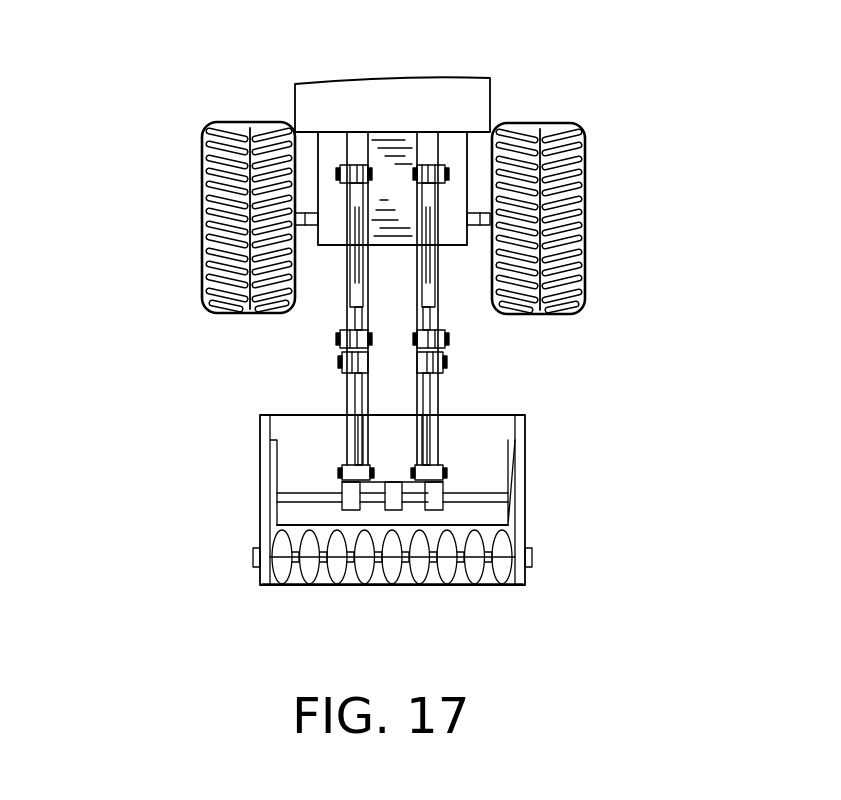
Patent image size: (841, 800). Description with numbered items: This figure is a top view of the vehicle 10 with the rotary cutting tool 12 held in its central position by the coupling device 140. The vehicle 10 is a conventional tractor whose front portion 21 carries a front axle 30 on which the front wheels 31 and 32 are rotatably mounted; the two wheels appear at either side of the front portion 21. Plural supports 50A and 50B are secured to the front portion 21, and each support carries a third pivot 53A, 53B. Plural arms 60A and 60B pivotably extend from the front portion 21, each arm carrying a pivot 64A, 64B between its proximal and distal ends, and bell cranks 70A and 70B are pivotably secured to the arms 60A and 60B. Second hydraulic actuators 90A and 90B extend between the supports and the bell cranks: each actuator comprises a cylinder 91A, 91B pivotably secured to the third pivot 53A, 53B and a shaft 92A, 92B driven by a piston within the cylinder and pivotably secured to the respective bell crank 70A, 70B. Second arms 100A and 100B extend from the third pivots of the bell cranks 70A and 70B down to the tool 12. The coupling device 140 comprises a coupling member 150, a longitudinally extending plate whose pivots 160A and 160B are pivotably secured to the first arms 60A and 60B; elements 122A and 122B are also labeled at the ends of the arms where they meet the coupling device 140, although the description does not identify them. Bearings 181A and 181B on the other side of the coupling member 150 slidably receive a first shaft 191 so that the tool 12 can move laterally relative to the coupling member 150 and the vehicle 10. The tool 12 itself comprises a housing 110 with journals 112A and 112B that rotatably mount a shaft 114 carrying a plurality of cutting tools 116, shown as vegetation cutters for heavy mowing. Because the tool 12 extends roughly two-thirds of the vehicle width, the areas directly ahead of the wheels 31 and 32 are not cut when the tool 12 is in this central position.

The vehicle 10 is at (183, 78).
The rotary cutting tool 12 is at (500, 585).
The front portion 21 is at (467, 180).
The front axle 30 is at (537, 218).
The front wheel 31 is at (560, 155).
The front wheel 32 is at (215, 127).
The support 50A is at (437, 167).
The support 50B is at (365, 167).
The third pivot 53A is at (430, 165).
The third pivot 53B is at (352, 168).
The arm 60A is at (437, 278).
The arm 60B is at (213, 153).
The pivot 64A is at (350, 322).
The pivot 64B is at (350, 287).
The bell crank 70A is at (443, 357).
The bell crank 70B is at (343, 325).
The second hydraulic actuator 90A is at (437, 307).
The second hydraulic actuator 90B is at (347, 172).
The cylinder 91A is at (437, 262).
The cylinder 91B is at (353, 190).
The shaft 92A is at (443, 327).
The shaft 92B is at (350, 243).
The second arm 100A is at (437, 393).
The second arm 100B is at (357, 392).
The housing 110 is at (525, 585).
The journal 112A is at (532, 558).
The journal 112B is at (254, 566).
The shaft 114 is at (326, 568).
The cutting tools 116 is at (284, 585).
The collar 122A is at (445, 471).
The collar 122B is at (340, 471).
The coupling device 140 is at (135, 406).
The coupling member 150 is at (398, 490).
The pivot 160A is at (443, 482).
The pivot 160B is at (343, 482).
The bearing 181A is at (445, 506).
The bearing 181B is at (340, 506).
The first shaft 191 is at (415, 506).